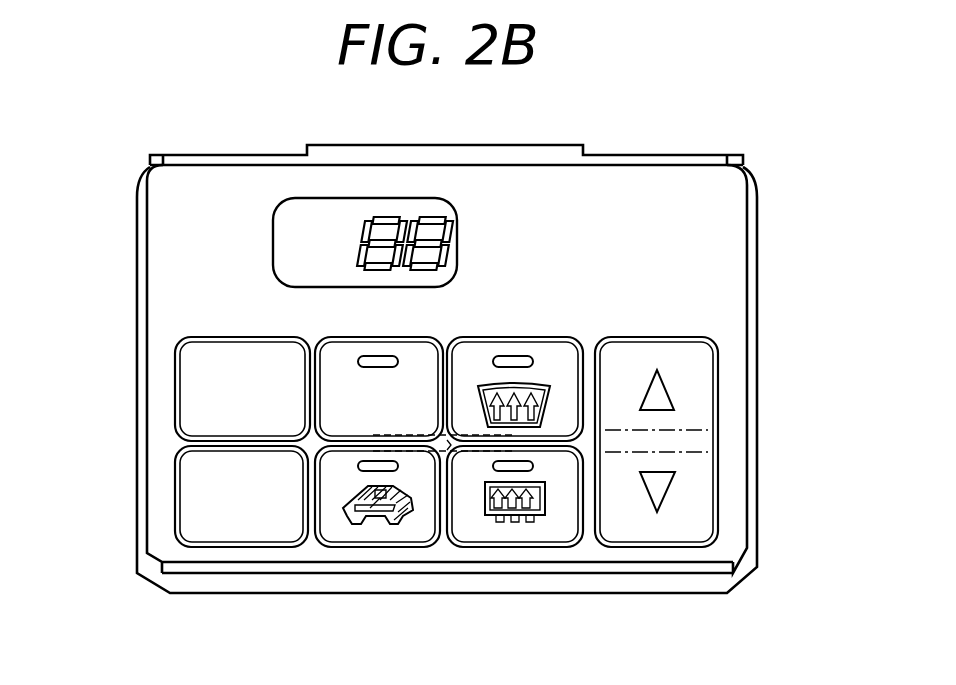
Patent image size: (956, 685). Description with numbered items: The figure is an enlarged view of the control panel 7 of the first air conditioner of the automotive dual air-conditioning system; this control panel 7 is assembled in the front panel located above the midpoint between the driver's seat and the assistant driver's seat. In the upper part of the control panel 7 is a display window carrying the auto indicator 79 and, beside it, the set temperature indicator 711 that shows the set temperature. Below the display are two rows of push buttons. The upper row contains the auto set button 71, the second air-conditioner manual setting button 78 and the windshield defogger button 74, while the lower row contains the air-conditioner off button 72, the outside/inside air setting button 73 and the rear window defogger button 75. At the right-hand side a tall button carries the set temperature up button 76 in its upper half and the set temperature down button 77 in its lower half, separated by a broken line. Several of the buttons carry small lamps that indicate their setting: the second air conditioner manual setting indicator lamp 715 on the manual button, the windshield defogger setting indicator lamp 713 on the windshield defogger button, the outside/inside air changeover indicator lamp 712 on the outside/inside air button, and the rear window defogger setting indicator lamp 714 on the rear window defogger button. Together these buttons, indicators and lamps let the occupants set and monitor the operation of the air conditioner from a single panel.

The control panel 7 is at (489, 136).
The auto indicator 79 is at (273, 247).
The set temperature indicator 711 is at (457, 230).
The auto set button 71 is at (198, 378).
The No. 2 air-conditioner manual setting button 78 is at (340, 427).
The No. 2 air conditioner manual setting indicator lamp 715 is at (360, 358).
The windshield defogger button 74 is at (560, 397).
The windshield defogger setting indicator lamp 713 is at (522, 358).
The set temperature up button 76 is at (658, 393).
The set temperature down button 77 is at (660, 500).
The air-conditioner off button 72 is at (225, 518).
The outside/inside air setting button 73 is at (385, 530).
The outside/inside air changeover indicator lamp 712 is at (358, 466).
The rear window defogger button 75 is at (505, 530).
The rear window defogger setting indicator lamp 714 is at (538, 468).